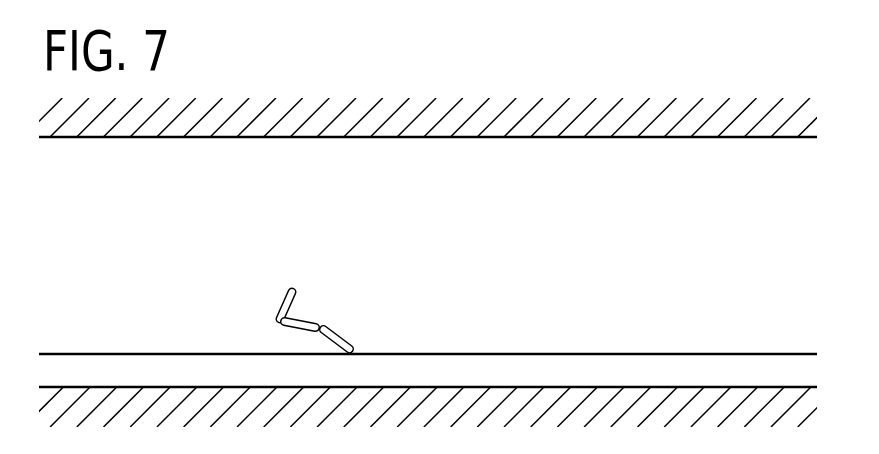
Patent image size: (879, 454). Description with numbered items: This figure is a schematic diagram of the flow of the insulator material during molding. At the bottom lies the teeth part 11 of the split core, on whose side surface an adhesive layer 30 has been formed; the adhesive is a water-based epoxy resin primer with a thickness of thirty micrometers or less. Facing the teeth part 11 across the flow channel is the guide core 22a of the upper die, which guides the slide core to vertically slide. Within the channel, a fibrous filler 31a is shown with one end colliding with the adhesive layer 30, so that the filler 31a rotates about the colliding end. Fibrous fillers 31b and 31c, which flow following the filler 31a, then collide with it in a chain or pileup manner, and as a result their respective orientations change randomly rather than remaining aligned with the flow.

The guide core 22a is at (705, 138).
The adhesive layer 30 is at (632, 362).
The teeth part 11 is at (708, 397).
The fibrous filler 31a is at (340, 332).
The fibrous filler 31b is at (298, 331).
The fibrous filler 31c is at (285, 295).